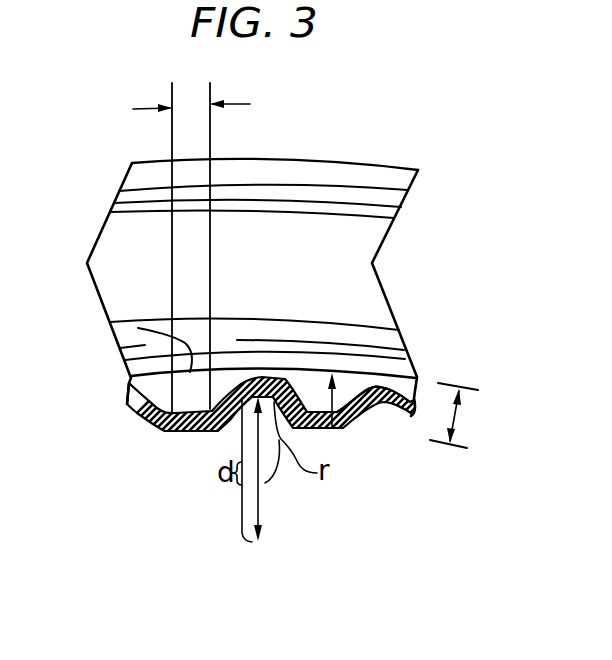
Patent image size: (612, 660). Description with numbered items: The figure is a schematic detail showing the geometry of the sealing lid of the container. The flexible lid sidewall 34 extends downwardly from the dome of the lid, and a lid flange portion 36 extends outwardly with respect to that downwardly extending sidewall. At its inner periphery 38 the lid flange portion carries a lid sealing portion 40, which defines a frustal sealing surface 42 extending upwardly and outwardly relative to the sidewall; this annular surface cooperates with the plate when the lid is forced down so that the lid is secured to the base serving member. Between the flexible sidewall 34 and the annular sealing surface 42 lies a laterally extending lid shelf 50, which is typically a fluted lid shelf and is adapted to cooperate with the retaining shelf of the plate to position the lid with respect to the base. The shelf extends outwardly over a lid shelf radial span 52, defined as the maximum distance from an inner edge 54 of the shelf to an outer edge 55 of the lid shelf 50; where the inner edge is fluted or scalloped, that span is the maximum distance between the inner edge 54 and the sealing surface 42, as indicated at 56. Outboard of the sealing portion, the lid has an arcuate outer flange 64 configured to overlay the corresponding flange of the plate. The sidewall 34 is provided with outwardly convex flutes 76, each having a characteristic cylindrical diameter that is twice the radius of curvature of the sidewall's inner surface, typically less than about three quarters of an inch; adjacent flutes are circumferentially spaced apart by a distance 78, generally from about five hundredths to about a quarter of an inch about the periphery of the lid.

The flexible lid sidewall 34 is at (112, 322).
The lid flange portion 36 is at (270, 254).
The inner periphery 38 is at (165, 353).
The lid sealing portion 40 is at (348, 360).
The frustal sealing surface 42 is at (400, 362).
The lid shelf 50 is at (182, 398).
The lid shelf radial span 52 is at (455, 417).
The inner edge 54 is at (327, 430).
The outer edge 55 is at (303, 370).
The maximum distance 56 is at (370, 413).
The arcuate outer flange 64 is at (180, 225).
The outwardly convex flutes 76 is at (273, 388).
The flute spacing distance 78 is at (147, 109).